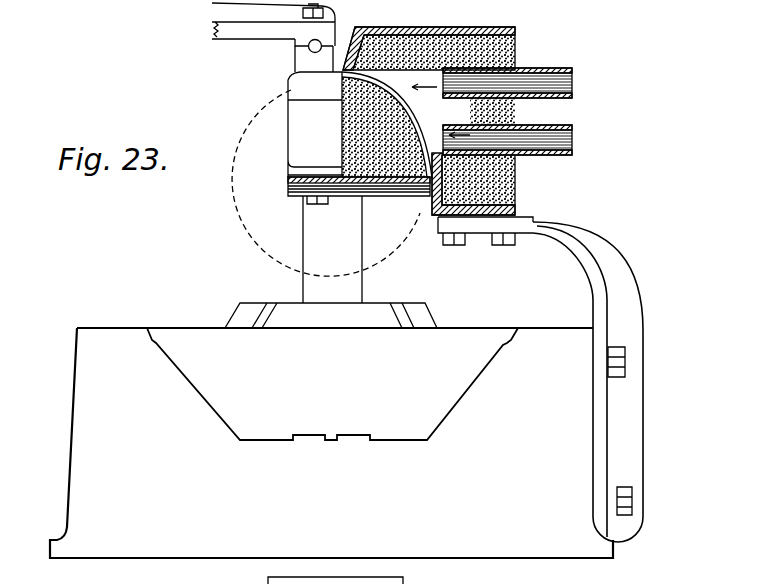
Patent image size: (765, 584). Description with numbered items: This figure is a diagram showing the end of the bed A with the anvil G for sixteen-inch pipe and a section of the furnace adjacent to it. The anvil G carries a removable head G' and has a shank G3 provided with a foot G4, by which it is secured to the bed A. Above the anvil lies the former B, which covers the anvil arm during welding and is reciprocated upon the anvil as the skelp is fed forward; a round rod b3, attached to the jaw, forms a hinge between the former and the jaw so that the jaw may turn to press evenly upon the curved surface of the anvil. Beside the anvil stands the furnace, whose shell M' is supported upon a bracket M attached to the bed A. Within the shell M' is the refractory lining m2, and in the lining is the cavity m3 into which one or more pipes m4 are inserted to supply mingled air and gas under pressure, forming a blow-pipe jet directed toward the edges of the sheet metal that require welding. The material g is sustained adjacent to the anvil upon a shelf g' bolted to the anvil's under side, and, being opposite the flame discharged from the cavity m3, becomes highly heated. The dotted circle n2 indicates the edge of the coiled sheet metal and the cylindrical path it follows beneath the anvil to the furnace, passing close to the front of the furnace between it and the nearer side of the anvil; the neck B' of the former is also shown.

The bed A is at (331, 443).
The former B is at (258, 40).
The round rod b3 is at (308, 47).
The lever neck B' is at (295, 64).
The anvil G is at (315, 124).
The removable head G' is at (315, 89).
The shank G3 is at (362, 282).
The foot G4 is at (285, 311).
The material g is at (387, 149).
The shelf g' is at (342, 202).
The dotted circle n2 is at (410, 256).
The bracket M is at (540, 379).
The shell of the furnace M' is at (475, 118).
The refractory lining m2 is at (515, 43).
The cavity m3 is at (441, 111).
The pipes m4 is at (572, 87).